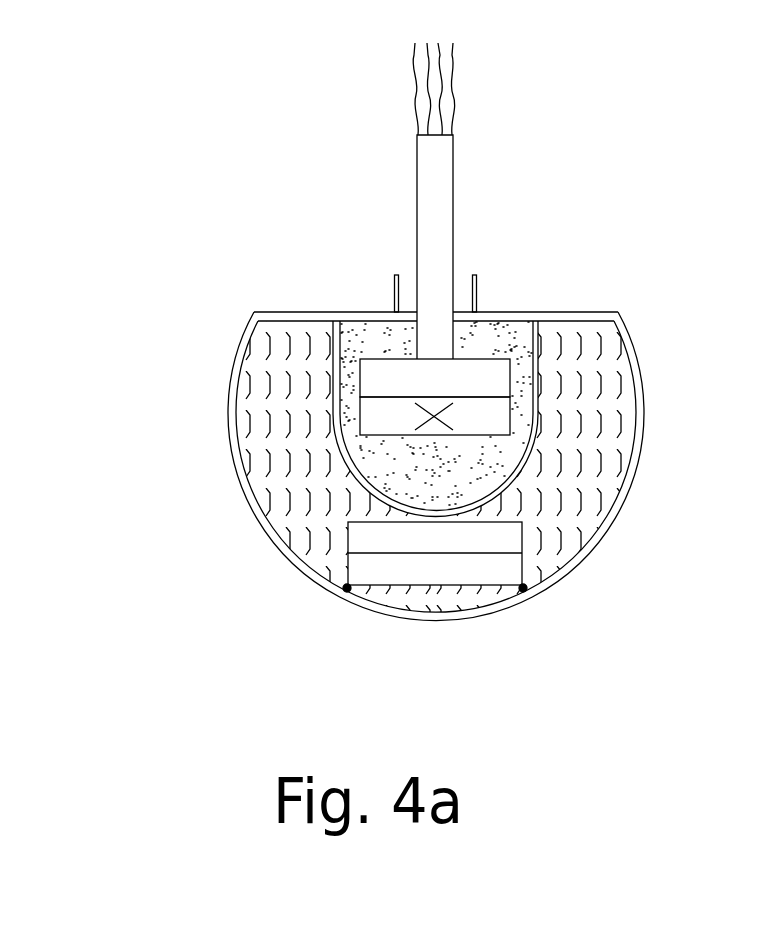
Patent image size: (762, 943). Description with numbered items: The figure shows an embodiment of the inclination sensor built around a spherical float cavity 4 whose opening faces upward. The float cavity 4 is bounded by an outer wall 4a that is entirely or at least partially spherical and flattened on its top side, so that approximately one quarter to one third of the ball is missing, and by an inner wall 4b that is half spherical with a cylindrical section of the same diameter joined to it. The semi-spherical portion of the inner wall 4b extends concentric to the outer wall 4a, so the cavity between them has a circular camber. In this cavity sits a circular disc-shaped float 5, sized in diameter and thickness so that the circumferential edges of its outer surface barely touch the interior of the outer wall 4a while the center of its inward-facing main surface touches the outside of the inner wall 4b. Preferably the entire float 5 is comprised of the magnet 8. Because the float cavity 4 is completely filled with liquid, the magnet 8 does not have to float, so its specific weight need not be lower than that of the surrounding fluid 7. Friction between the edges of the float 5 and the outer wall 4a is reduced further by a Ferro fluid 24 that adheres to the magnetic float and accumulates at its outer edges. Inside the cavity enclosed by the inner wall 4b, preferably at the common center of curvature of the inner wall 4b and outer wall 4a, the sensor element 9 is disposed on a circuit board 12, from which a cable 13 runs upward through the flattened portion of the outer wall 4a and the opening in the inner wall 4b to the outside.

The float cavity 4 is at (272, 462).
The outer wall 4a is at (635, 393).
The inner wall 4b is at (533, 360).
The float 5 is at (348, 547).
The fluid 7 is at (538, 471).
The magnet 8 is at (435, 553).
The sensor element 9 is at (435, 417).
The circuit board 12 is at (435, 379).
The cable 13 is at (436, 201).
The Ferro fluid 24 is at (521, 592).